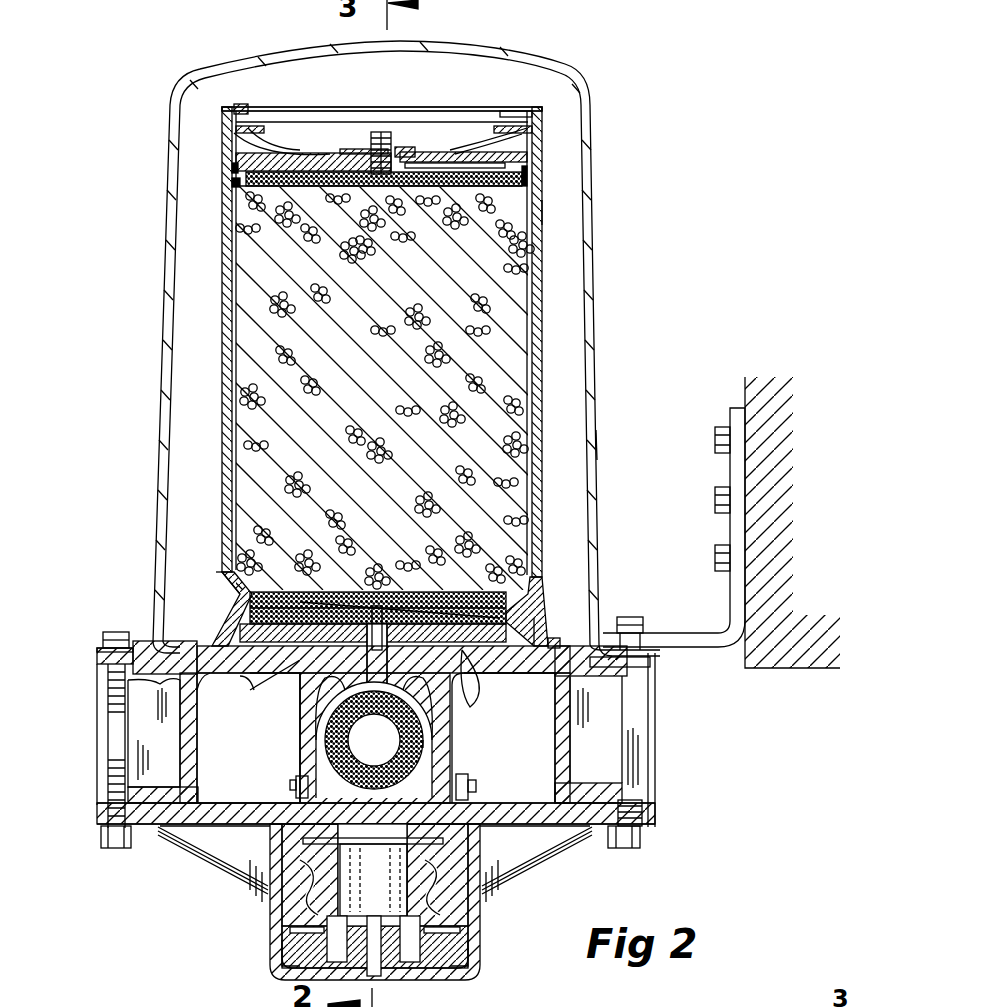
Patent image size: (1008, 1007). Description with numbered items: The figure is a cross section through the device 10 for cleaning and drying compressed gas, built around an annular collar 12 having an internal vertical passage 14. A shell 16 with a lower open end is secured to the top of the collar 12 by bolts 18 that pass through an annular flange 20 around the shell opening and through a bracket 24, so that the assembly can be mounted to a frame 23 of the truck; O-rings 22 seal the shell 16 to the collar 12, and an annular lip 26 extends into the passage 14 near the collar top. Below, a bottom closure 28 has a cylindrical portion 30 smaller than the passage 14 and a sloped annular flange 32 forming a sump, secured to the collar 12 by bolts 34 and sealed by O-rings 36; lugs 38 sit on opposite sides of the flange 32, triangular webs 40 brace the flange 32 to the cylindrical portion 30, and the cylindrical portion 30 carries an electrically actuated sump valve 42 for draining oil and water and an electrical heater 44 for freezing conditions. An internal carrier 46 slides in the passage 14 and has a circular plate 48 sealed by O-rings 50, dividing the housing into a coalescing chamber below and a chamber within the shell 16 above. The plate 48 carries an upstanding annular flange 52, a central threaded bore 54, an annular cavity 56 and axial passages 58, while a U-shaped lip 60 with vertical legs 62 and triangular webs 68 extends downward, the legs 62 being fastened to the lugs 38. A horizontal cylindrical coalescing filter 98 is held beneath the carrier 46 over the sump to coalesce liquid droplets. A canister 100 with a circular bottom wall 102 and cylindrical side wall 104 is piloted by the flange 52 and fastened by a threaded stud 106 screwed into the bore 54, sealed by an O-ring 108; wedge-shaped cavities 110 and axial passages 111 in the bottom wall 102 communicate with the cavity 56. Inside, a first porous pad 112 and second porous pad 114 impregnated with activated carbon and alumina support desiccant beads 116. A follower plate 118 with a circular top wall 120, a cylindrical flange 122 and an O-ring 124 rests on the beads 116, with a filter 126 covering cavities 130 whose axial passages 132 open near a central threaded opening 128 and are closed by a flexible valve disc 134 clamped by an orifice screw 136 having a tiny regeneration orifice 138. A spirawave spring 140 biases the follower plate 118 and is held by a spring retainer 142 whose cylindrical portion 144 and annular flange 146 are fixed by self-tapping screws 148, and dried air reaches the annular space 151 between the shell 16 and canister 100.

The device for cleaning and drying compressed gas 10 is at (158, 60).
The annular collar 12 is at (670, 730).
The internal vertical passage 14 is at (290, 742).
The shell 16 is at (587, 76).
The bolts 18 is at (110, 634).
The annular flange 20 is at (100, 651).
The O-rings 22 is at (625, 666).
The frame 23 is at (745, 384).
The bracket 24 is at (696, 634).
The annular lip 26 is at (548, 640).
The bottom closure 28 is at (258, 926).
The cylindrical portion 30 is at (270, 952).
The annular flange 32 is at (147, 828).
The bolts 34 is at (110, 846).
The O-rings 36 is at (604, 826).
The lugs 38 is at (300, 775).
The webs 40 is at (223, 856).
The sump valve 42 is at (378, 975).
The electrical heater 44 is at (458, 936).
The internal carrier 46 is at (205, 606).
The circular plate 48 is at (178, 686).
The O-rings 50 is at (509, 679).
The annular flange 52 is at (230, 596).
The threaded bore 54 is at (374, 740).
The annular cavity 56 is at (374, 612).
The axial passages 58 is at (290, 676).
The U-shaped lip 60 is at (290, 755).
The vertical legs 62 is at (320, 776).
The webs 68 is at (250, 686).
The coalescing filter 98 is at (425, 745).
The canister 100 is at (560, 118).
The circular bottom wall 102 is at (320, 622).
The cylindrical side wall 104 is at (544, 172).
The threaded stud 106 is at (300, 664).
The O-ring 108 is at (222, 646).
The cavities 110 is at (435, 622).
The axial passages 111 is at (490, 690).
The first porous pad 112 is at (536, 618).
The second porous pad 114 is at (526, 600).
The desiccant beads 116 is at (412, 392).
The follower plate 118 is at (441, 140).
The circular top wall 120 is at (250, 150).
The cylindrical flange 122 is at (543, 212).
The O-ring 124 is at (234, 174).
The filter 126 is at (236, 202).
The central threaded opening 128 is at (345, 246).
The cavities 130 is at (458, 165).
The axial passages 132 is at (410, 150).
The flexible valve disc 134 is at (348, 152).
The orifice screw 136 is at (384, 132).
The regeneration orifice 138 is at (362, 152).
The spirawave spring 140 is at (268, 126).
The spring retainer 142 is at (262, 84).
The cylindrical portion 144 is at (540, 116).
The annular flange 146 is at (510, 114).
The self-tapping screws 148 is at (235, 110).
The annular space 151 is at (578, 456).